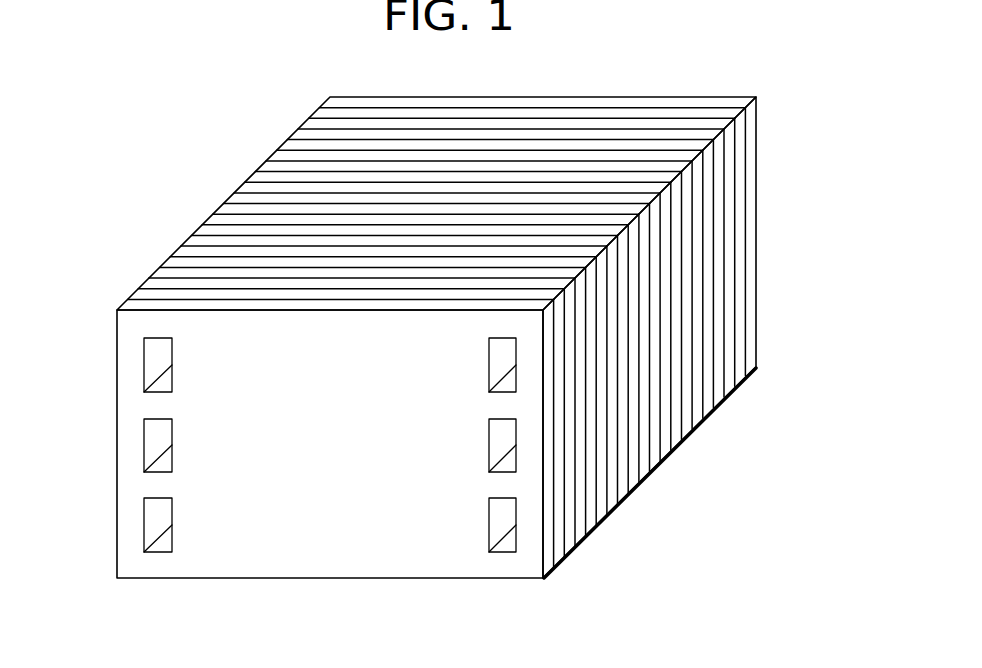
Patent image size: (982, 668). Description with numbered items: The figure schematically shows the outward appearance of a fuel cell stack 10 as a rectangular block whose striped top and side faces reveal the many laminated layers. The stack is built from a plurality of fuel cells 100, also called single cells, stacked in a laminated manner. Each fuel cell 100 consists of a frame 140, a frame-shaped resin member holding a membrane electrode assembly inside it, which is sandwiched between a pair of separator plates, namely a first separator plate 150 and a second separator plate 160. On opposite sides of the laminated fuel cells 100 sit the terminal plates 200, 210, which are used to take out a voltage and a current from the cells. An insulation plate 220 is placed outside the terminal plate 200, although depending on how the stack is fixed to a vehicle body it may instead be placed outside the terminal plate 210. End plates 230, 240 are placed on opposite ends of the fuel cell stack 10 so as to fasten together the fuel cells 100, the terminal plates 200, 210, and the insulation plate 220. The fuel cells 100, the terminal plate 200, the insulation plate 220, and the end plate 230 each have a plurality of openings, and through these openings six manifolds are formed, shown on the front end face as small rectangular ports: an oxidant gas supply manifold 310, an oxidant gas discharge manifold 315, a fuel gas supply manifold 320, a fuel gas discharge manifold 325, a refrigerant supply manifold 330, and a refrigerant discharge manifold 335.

The fuel cell stack 10 is at (210, 115).
The fuel cell 100 is at (727, 407).
The frame 140 is at (588, 535).
The first separator plate 150 is at (580, 547).
The second separator plate 160 is at (605, 523).
The terminal plate 200 is at (568, 563).
The terminal plate 210 is at (744, 388).
The insulation plate 220 is at (563, 560).
The end plate 230 is at (548, 580).
The end plate 240 is at (757, 378).
The oxidant gas supply manifold 310 is at (144, 362).
The oxidant gas discharge manifold 315 is at (489, 522).
The fuel gas supply manifold 320 is at (144, 522).
The fuel gas discharge manifold 325 is at (489, 362).
The refrigerant supply manifold 330 is at (144, 447).
The refrigerant discharge manifold 335 is at (489, 447).